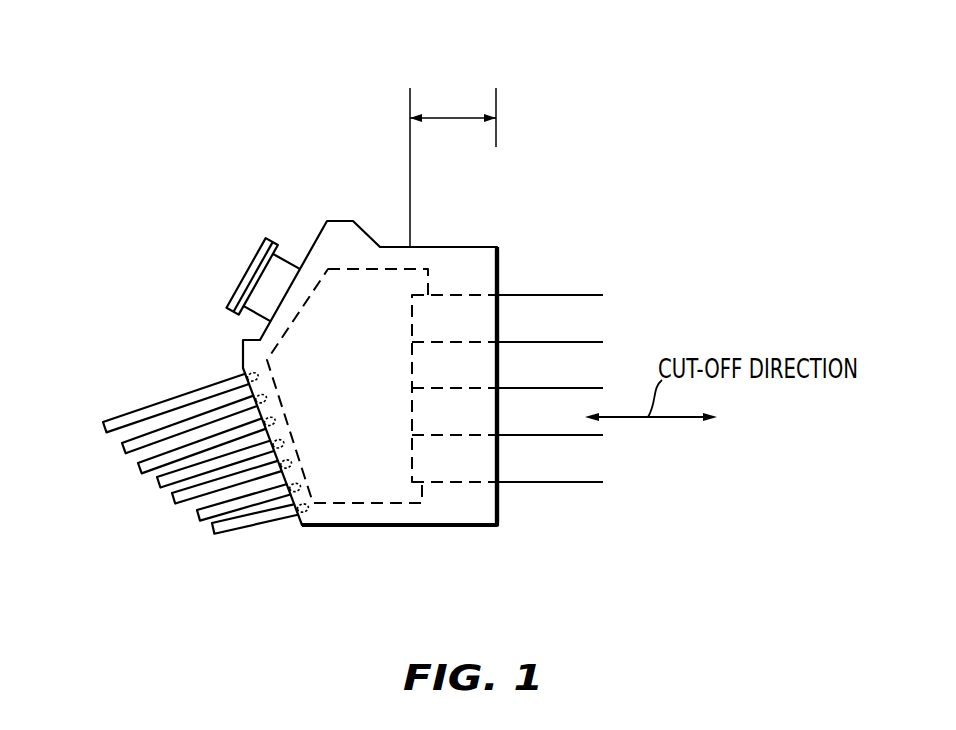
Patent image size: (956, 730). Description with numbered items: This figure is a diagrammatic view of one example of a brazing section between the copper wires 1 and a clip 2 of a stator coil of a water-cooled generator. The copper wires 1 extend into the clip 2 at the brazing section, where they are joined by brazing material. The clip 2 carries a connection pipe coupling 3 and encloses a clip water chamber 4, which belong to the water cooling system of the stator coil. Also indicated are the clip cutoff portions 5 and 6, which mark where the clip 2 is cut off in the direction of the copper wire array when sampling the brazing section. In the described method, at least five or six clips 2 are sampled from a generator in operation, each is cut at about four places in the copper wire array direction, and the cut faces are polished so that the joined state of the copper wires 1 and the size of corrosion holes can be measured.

The copper wires 1 is at (585, 295).
The clip 2 is at (462, 247).
The connection pipe coupling 3 is at (243, 270).
The clip water chamber 4 is at (340, 495).
The clip cutoff portion 5 is at (428, 238).
The clip cutoff portion 6 is at (497, 238).